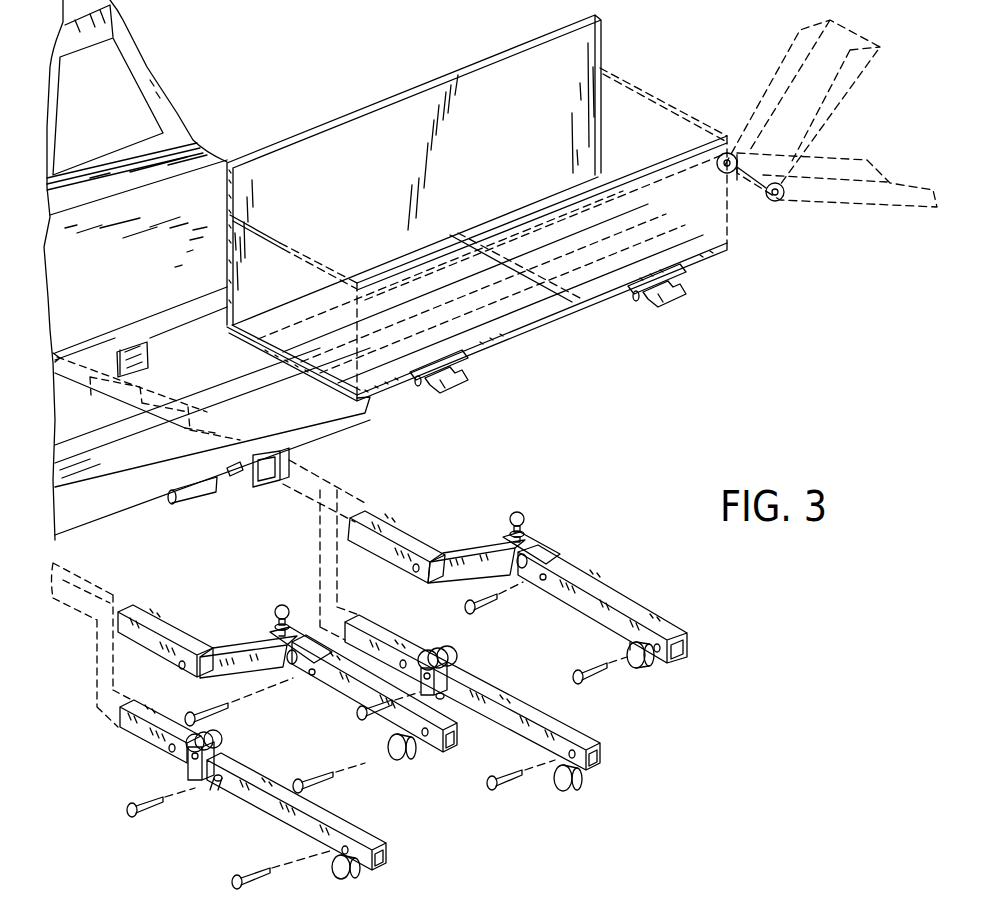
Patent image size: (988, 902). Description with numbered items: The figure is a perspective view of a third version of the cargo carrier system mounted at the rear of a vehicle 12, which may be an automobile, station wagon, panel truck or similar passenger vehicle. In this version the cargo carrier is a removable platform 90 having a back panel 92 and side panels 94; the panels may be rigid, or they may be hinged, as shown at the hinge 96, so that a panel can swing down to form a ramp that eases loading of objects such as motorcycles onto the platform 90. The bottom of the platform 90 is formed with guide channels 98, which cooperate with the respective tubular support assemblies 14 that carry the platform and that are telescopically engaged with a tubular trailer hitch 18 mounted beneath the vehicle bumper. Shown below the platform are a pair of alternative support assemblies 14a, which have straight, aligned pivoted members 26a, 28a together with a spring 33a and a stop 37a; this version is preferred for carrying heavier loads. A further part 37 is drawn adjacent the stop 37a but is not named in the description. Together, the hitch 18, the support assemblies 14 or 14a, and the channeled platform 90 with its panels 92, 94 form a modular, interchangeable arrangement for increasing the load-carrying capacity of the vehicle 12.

The vehicle 12 is at (200, 178).
The support assembly 14 is at (340, 668).
The alternative support assembly 14a is at (343, 827).
The trailer hitch 18 is at (293, 458).
The pivoted member 26a is at (395, 530).
The pivoted member 28a is at (622, 603).
The spring 33a is at (450, 665).
The connecting plate 37 is at (548, 553).
The stop 37a is at (520, 513).
The removable platform 90 is at (556, 316).
The back panel 92 is at (480, 98).
The side panel 94 is at (657, 125).
The hinge 96 is at (775, 201).
The guide channel 98 is at (665, 293).